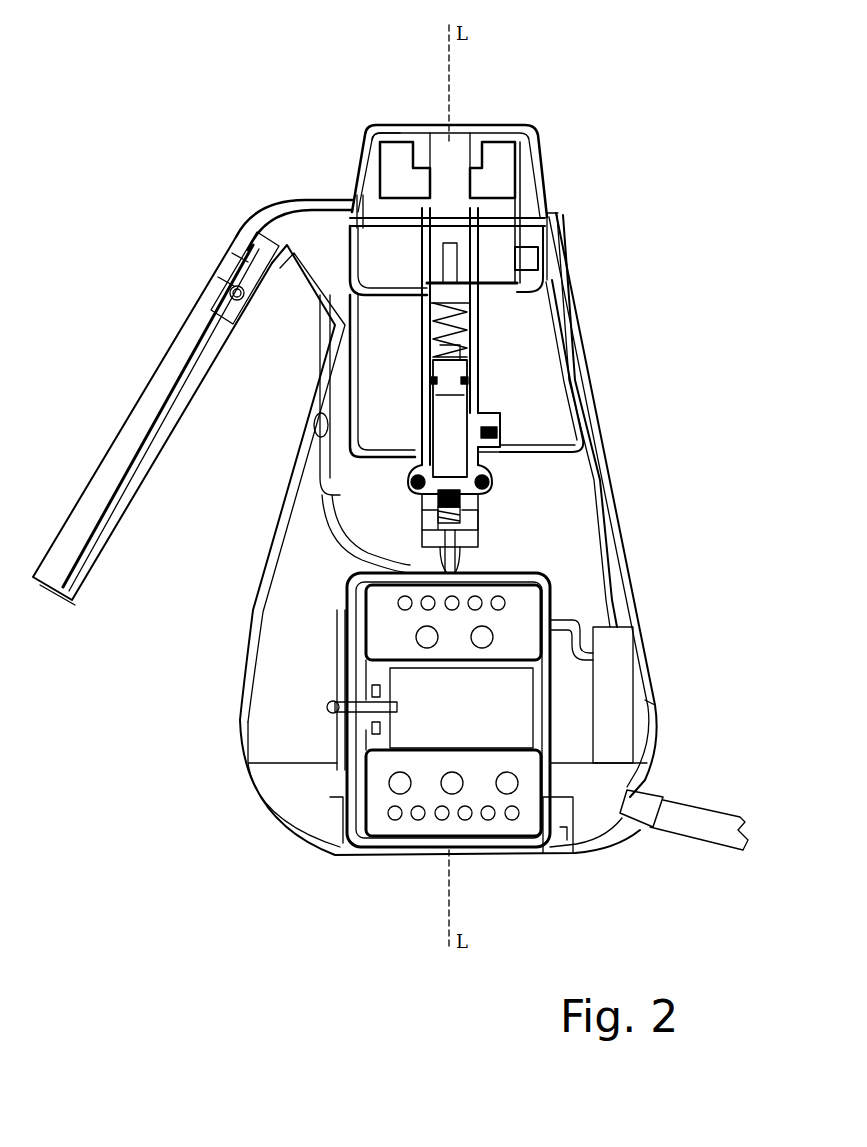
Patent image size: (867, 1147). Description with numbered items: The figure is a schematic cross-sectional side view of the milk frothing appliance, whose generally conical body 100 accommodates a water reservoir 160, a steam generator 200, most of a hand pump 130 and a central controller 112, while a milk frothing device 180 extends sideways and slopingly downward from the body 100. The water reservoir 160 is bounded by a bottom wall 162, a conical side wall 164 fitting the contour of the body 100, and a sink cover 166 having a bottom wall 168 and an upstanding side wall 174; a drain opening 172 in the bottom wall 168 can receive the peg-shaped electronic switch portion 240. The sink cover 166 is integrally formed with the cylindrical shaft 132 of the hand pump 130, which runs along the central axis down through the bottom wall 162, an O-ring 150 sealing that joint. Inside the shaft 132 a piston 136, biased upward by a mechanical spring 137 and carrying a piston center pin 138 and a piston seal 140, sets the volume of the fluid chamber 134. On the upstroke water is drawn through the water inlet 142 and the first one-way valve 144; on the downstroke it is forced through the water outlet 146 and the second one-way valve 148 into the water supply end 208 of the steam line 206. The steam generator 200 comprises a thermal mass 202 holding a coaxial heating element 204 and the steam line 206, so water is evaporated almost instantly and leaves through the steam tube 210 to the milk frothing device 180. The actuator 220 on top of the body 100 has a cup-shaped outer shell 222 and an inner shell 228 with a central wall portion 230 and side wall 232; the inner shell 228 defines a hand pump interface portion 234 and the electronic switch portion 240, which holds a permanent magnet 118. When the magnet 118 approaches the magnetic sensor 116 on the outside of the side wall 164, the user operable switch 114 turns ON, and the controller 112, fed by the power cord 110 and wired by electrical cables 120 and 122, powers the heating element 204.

The body 100 is at (272, 558).
The power cord 110 is at (690, 828).
The central controller 112 is at (618, 677).
The user operable switch 114 is at (580, 277).
The magnetic sensor 116 is at (557, 308).
The permanent magnet 118 is at (557, 247).
The electrical cable 120 is at (580, 493).
The electrical cable 122 is at (573, 637).
The hand pump 130 is at (410, 372).
The cylindrical shaft 132 is at (428, 327).
The fluid chamber 134 is at (450, 416).
The piston 136 is at (448, 368).
The mechanical spring 137 is at (427, 358).
The piston center pin 138 is at (523, 243).
The piston seal 140 is at (467, 383).
The water inlet 142 is at (513, 413).
The first one-way valve 144 is at (493, 440).
The water outlet 146 is at (458, 547).
The second one-way valve 148 is at (465, 523).
The O-ring 150 is at (413, 480).
The water reservoir 160 is at (410, 437).
The bottom wall 162 is at (537, 451).
The side wall 164 is at (318, 423).
The sink cover 166 is at (378, 162).
The bottom wall 168 is at (390, 288).
The drain opening 172 is at (517, 272).
The side wall 174 is at (370, 275).
The milk frothing device 180 is at (207, 275).
The steam generator 200 is at (330, 638).
The thermal mass 202 is at (378, 662).
The heating element 204 is at (428, 637).
The steam line 206 is at (405, 603).
The water supply end 208 is at (453, 560).
The steam tube 210 is at (330, 517).
The actuator 220 is at (423, 123).
The outer shell 222 is at (507, 130).
The inner shell 228 is at (363, 135).
The central wall portion 230 is at (400, 137).
The upstanding side wall 232 is at (347, 102).
The hand pump interface portion 234 is at (457, 178).
The electronic switch portion 240 is at (525, 178).